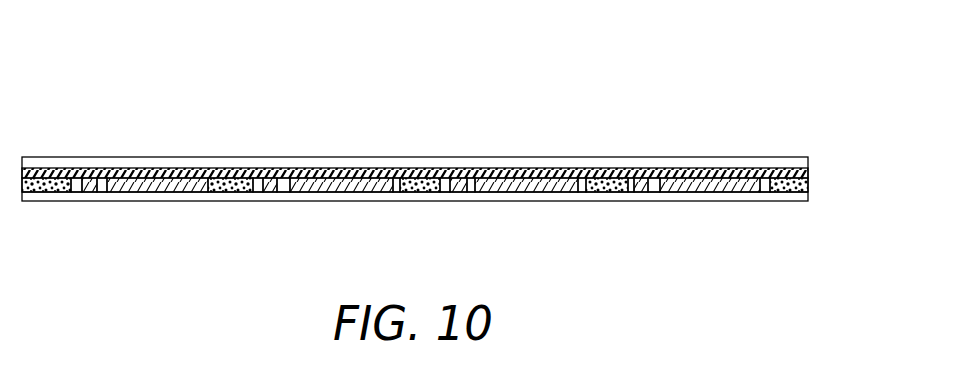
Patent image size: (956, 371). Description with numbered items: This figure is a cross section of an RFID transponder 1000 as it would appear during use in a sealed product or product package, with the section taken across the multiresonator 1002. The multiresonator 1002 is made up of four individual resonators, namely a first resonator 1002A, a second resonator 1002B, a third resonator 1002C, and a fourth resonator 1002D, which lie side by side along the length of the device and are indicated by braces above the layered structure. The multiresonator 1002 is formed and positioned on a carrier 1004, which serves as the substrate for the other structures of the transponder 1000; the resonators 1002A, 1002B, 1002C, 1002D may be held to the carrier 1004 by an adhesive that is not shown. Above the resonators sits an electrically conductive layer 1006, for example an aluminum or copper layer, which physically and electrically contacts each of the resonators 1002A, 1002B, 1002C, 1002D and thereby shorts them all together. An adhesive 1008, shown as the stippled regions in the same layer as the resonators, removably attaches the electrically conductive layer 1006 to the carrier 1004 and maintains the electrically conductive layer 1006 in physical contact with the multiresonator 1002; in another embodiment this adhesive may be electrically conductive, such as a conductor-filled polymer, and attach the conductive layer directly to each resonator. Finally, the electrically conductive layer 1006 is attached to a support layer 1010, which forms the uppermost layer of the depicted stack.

The transponder 1000 is at (104, 38).
The multiresonator 1002 is at (730, 83).
The first resonator 1002A is at (205, 147).
The second resonator 1002B is at (390, 147).
The third resonator 1002C is at (577, 147).
The fourth resonator 1002D is at (762, 147).
The carrier 1004 is at (72, 196).
The electrically conductive layer 1006 is at (787, 172).
The adhesive 1008 is at (237, 189).
The support layer 1010 is at (48, 164).